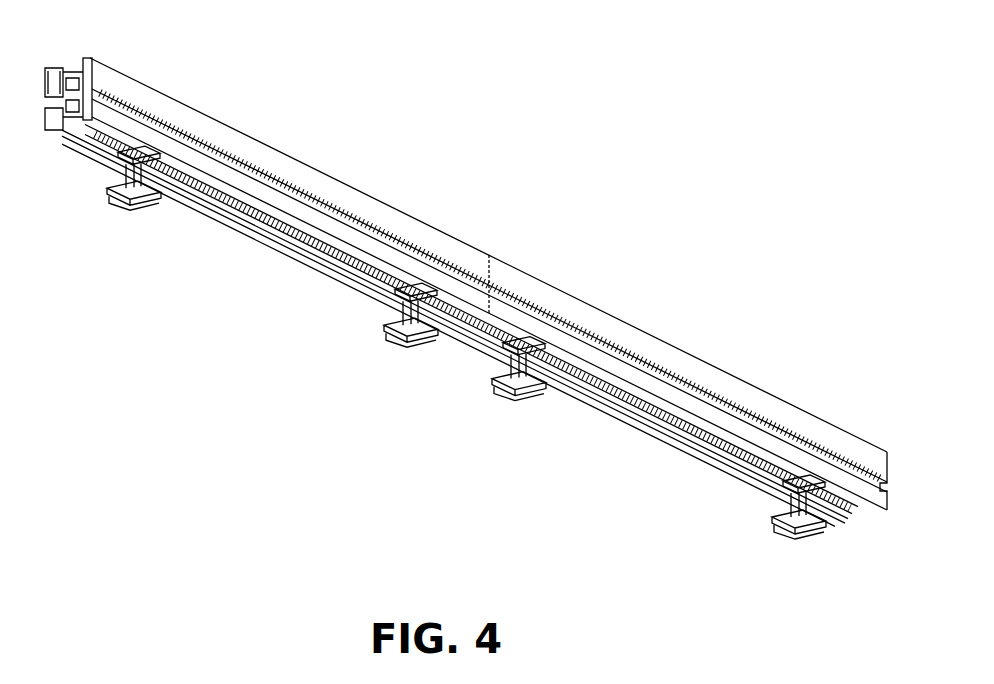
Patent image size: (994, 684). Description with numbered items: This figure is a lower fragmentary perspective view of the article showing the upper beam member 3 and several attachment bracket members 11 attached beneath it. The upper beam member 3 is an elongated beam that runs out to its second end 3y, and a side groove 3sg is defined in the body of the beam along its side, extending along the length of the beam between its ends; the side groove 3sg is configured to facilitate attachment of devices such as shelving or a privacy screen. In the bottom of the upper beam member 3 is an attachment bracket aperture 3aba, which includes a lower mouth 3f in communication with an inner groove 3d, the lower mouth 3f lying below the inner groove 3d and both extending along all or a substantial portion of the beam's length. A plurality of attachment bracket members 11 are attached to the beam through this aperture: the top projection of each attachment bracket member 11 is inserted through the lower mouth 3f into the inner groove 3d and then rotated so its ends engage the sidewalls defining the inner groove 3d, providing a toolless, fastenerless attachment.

The upper beam member 3 is at (470, 326).
The second end 3y is at (85, 87).
The side groove 3sg is at (345, 214).
The inner groove 3d is at (82, 140).
The attachment bracket aperture 3aba is at (60, 140).
The lower mouth 3f is at (857, 500).
The attachment bracket member 11 is at (466, 396).